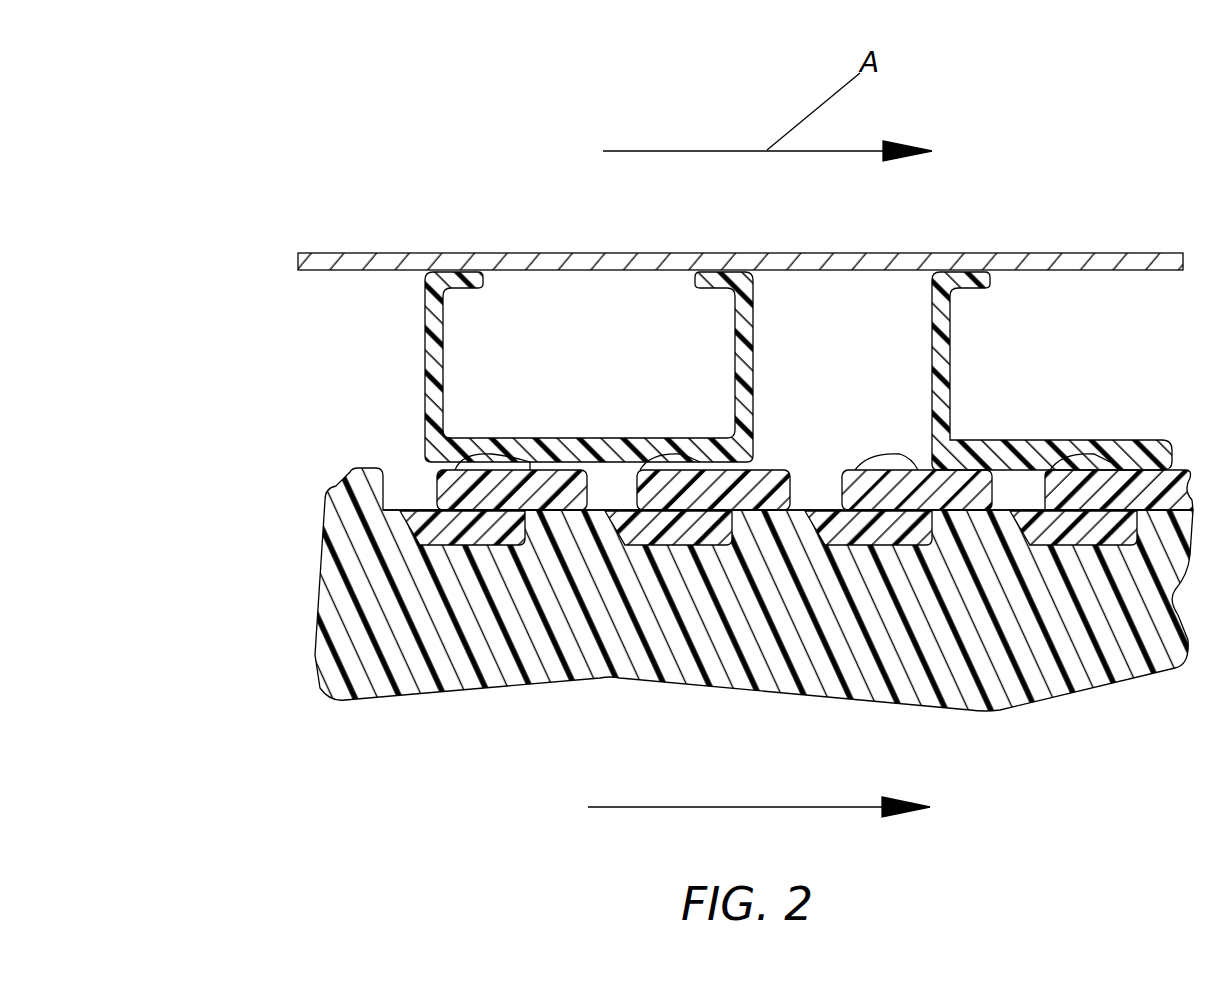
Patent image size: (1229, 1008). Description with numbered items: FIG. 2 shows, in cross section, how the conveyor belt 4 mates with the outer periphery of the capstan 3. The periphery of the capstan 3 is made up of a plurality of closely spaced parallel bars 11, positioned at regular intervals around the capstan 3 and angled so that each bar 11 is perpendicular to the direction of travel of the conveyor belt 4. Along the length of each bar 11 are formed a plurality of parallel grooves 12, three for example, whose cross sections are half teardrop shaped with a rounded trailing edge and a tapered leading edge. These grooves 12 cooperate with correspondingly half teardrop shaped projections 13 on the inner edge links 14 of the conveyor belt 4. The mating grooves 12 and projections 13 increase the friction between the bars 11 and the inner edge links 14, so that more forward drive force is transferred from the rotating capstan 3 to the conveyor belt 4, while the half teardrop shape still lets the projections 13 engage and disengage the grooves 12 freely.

The capstan 3 is at (692, 253).
The conveyor belt 4 is at (347, 612).
The bar 11 is at (757, 318).
The groove 12 is at (1038, 443).
The projection 13 is at (897, 447).
The inner edge link 14 is at (767, 470).